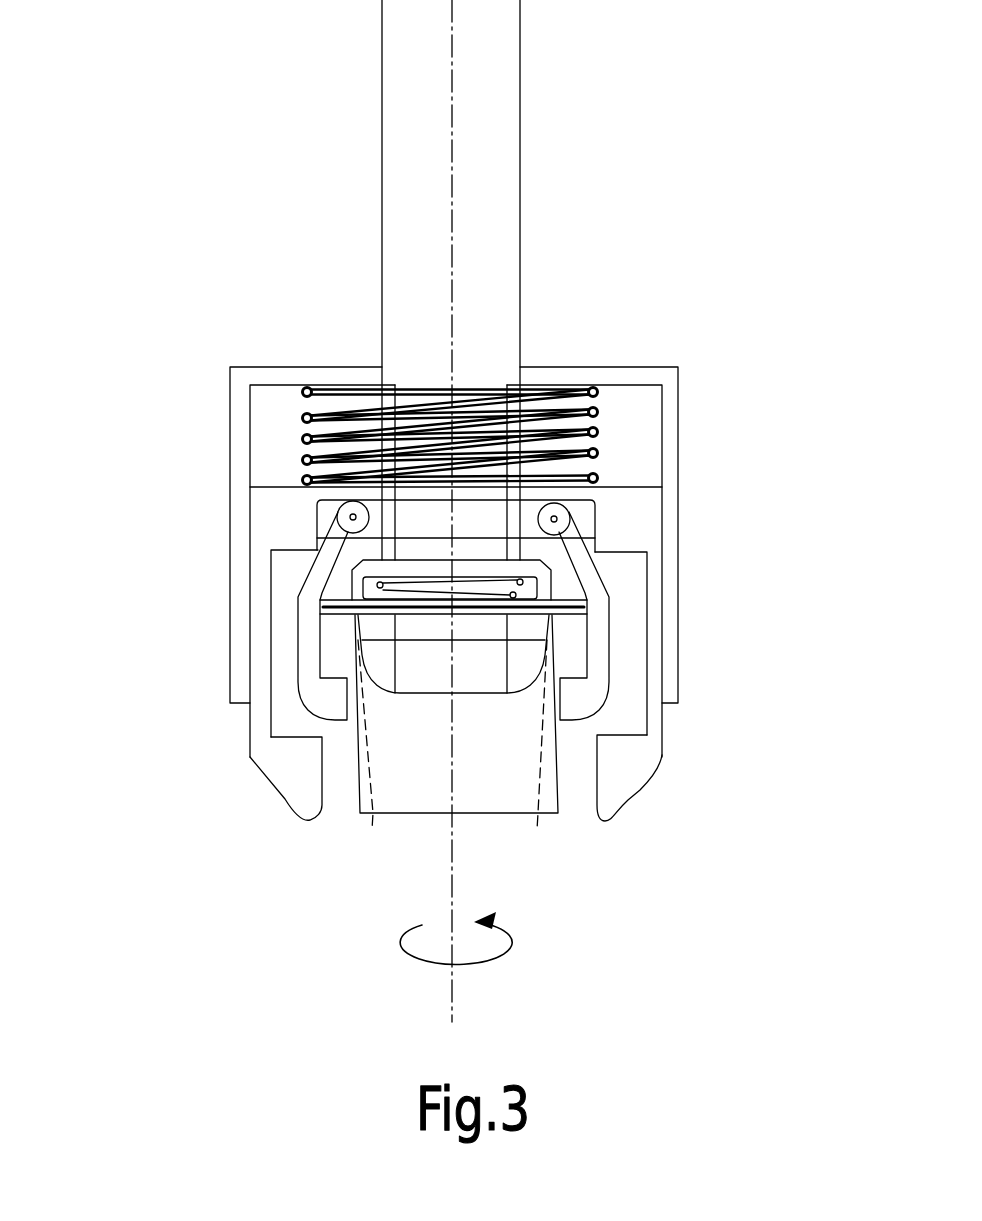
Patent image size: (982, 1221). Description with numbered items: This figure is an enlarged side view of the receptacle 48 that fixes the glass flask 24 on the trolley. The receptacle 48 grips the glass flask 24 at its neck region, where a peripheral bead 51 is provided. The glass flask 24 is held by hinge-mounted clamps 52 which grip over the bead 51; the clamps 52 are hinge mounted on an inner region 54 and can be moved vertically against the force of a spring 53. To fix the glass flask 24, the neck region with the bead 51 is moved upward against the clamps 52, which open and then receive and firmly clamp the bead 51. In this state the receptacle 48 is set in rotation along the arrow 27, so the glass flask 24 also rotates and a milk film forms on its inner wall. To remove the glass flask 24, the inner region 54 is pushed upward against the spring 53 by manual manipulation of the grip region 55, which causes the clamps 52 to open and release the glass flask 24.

The receptacle 48 is at (163, 293).
The spring 53 is at (594, 388).
The inner region 54 is at (627, 520).
The hinge-mounted clamps 52 is at (300, 578).
The peripheral bead 51 is at (343, 645).
The grip region 55 is at (642, 787).
The glass flask 24 is at (365, 820).
The arrow 27 is at (512, 947).